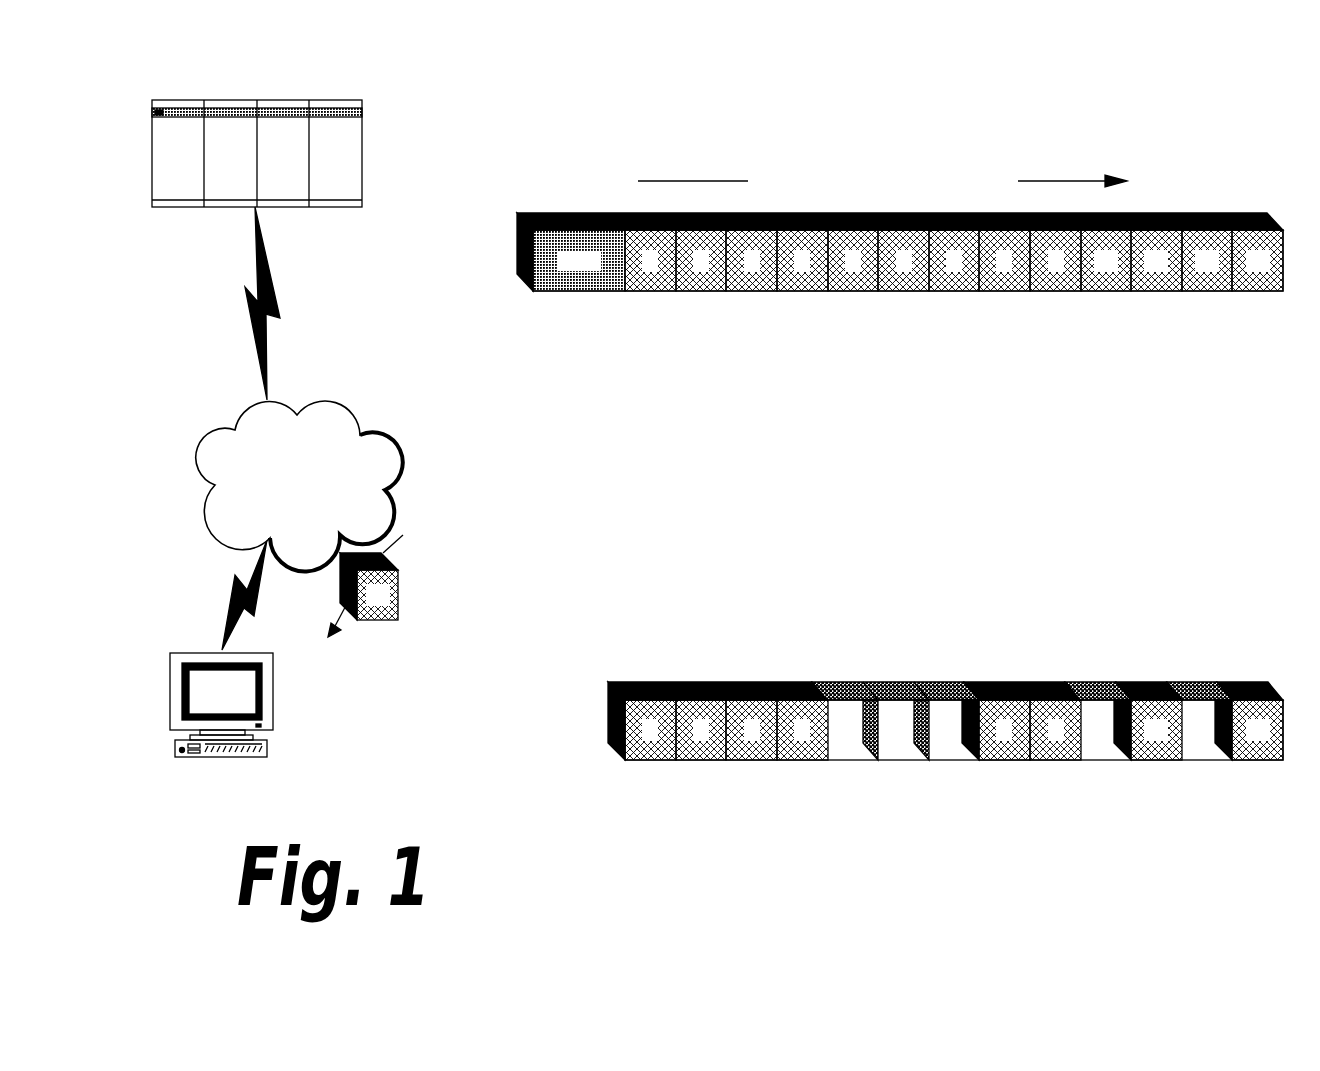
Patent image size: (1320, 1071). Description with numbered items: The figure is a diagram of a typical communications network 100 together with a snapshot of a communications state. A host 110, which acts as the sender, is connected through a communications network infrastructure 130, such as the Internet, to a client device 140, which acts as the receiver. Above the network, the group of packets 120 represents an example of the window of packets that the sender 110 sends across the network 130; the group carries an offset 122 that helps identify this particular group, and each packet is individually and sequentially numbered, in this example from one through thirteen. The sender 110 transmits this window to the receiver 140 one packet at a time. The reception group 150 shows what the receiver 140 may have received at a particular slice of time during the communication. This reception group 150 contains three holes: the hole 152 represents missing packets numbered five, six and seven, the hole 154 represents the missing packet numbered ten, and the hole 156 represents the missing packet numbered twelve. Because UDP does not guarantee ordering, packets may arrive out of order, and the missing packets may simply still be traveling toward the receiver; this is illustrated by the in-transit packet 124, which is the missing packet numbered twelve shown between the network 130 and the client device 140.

The system 100 is at (446, 405).
The host 110 is at (363, 150).
The group of packets 120 is at (874, 268).
The offset 122 is at (563, 213).
The in-transit packet 124 is at (402, 602).
The communications network infrastructure 130 is at (205, 462).
The client device 140 is at (272, 705).
The reception group 150 is at (945, 727).
The hole 152 is at (827, 777).
The hole 154 is at (1080, 777).
The hole 156 is at (1165, 677).